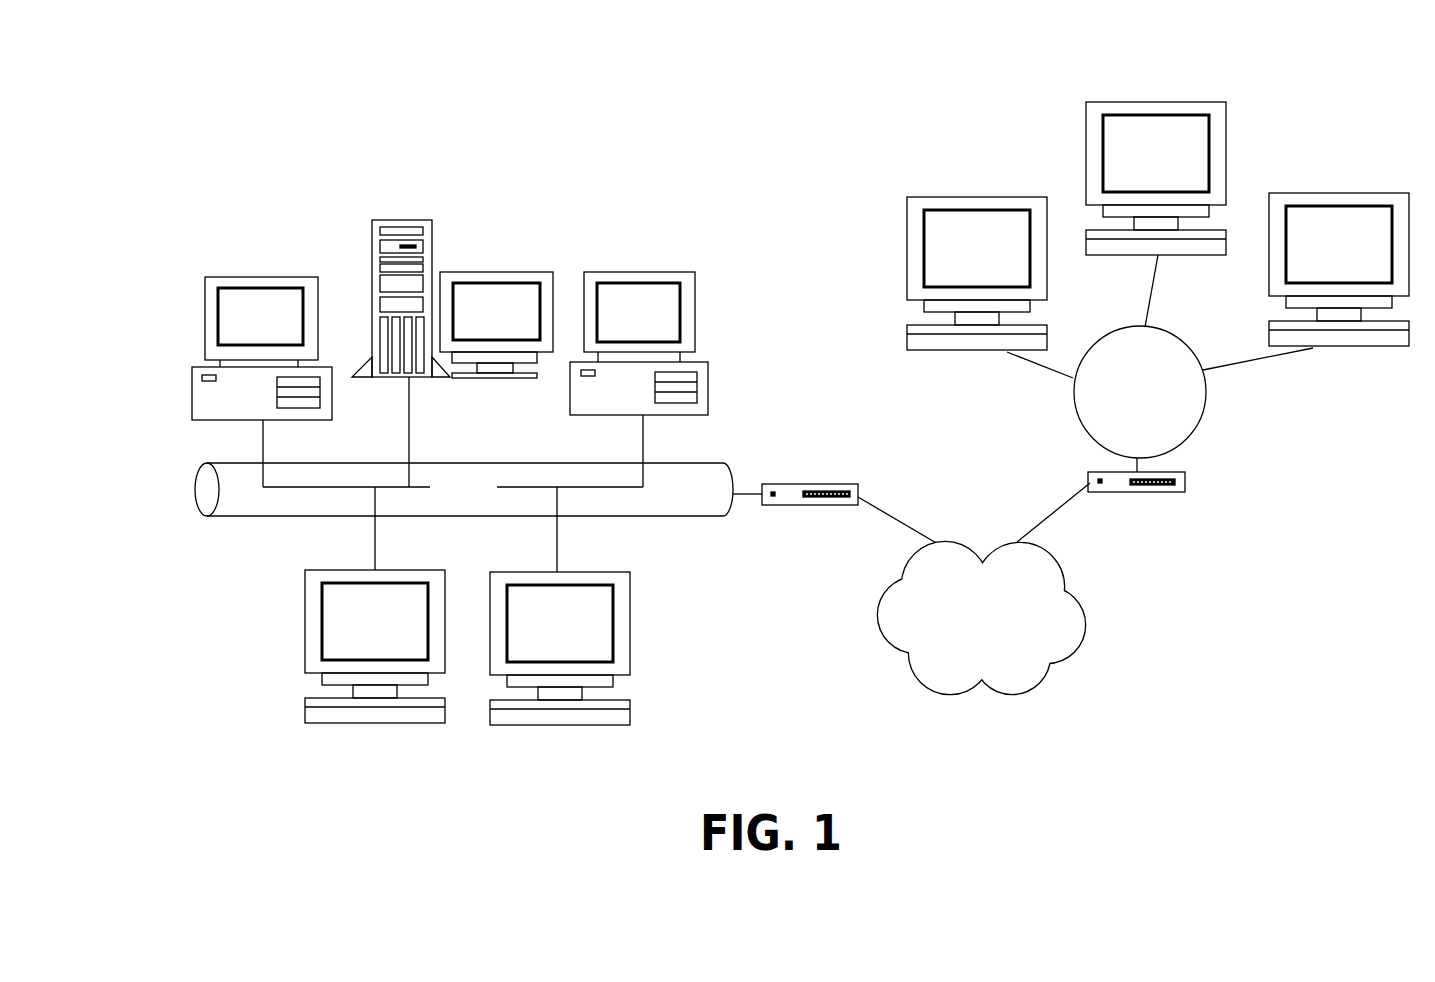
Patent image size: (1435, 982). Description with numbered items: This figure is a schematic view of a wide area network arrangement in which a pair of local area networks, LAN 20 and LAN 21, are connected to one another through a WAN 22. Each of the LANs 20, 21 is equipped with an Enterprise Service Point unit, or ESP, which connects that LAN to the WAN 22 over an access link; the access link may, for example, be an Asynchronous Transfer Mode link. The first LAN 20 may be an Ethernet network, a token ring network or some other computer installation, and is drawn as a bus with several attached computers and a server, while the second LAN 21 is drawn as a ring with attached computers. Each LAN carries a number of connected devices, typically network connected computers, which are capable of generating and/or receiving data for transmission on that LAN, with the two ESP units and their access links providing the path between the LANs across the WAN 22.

The LAN 20 is at (519, 434).
The LAN 21 is at (1058, 417).
The WAN 22 is at (920, 674).